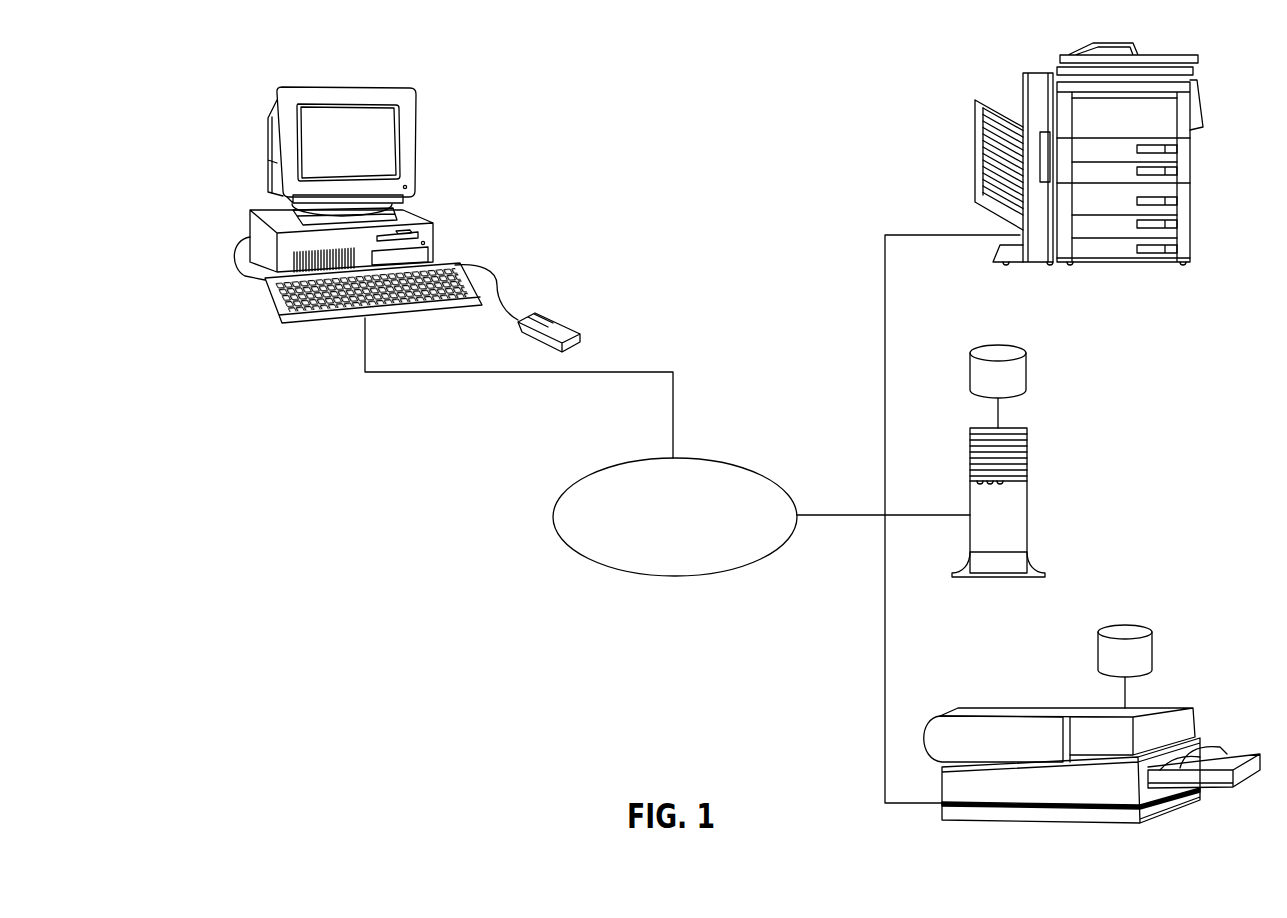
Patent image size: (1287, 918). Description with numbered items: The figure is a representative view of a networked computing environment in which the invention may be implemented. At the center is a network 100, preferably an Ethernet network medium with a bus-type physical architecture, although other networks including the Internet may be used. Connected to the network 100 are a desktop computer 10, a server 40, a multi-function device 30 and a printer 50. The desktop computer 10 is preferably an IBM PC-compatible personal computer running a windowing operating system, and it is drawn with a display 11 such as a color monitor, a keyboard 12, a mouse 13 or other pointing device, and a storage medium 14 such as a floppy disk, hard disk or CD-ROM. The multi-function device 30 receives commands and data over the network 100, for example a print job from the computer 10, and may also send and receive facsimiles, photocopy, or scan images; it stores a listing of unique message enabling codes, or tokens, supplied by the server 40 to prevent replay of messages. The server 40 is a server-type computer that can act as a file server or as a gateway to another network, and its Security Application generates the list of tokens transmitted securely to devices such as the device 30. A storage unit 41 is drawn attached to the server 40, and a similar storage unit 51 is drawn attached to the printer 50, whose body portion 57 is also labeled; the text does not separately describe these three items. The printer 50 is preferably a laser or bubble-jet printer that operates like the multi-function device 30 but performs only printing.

The desktop computer 10 is at (295, 85).
The display 11 is at (392, 123).
The keyboard 12 is at (270, 302).
The mouse 13 is at (563, 325).
The storage medium 14 is at (428, 254).
The multi-function device 30 is at (1040, 72).
The server 40 is at (1027, 496).
The server database 41 is at (1028, 360).
The printer 50 is at (1035, 707).
The scanner database 51 is at (1137, 628).
The scanner base unit 57 is at (994, 790).
The network 100 is at (808, 461).